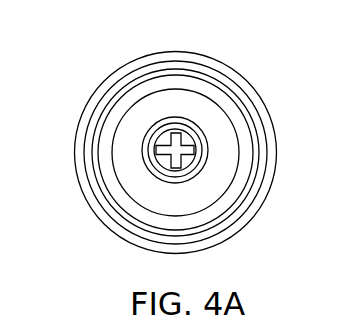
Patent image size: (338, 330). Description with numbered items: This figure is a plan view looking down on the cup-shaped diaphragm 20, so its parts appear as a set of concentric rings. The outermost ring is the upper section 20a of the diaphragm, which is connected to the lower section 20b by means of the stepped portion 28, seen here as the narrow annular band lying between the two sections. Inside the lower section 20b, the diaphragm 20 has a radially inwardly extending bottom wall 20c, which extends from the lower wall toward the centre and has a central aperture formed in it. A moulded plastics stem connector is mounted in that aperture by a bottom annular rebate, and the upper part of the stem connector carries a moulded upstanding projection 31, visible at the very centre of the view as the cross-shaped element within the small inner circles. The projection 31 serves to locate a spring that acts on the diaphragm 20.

The cup-shaped diaphragm 20 is at (207, 53).
The upper section 20a is at (264, 138).
The lower section 20b is at (247, 190).
The bottom wall 20c is at (138, 182).
The stepped portion 28 is at (115, 100).
The upstanding projection 31 is at (176, 168).